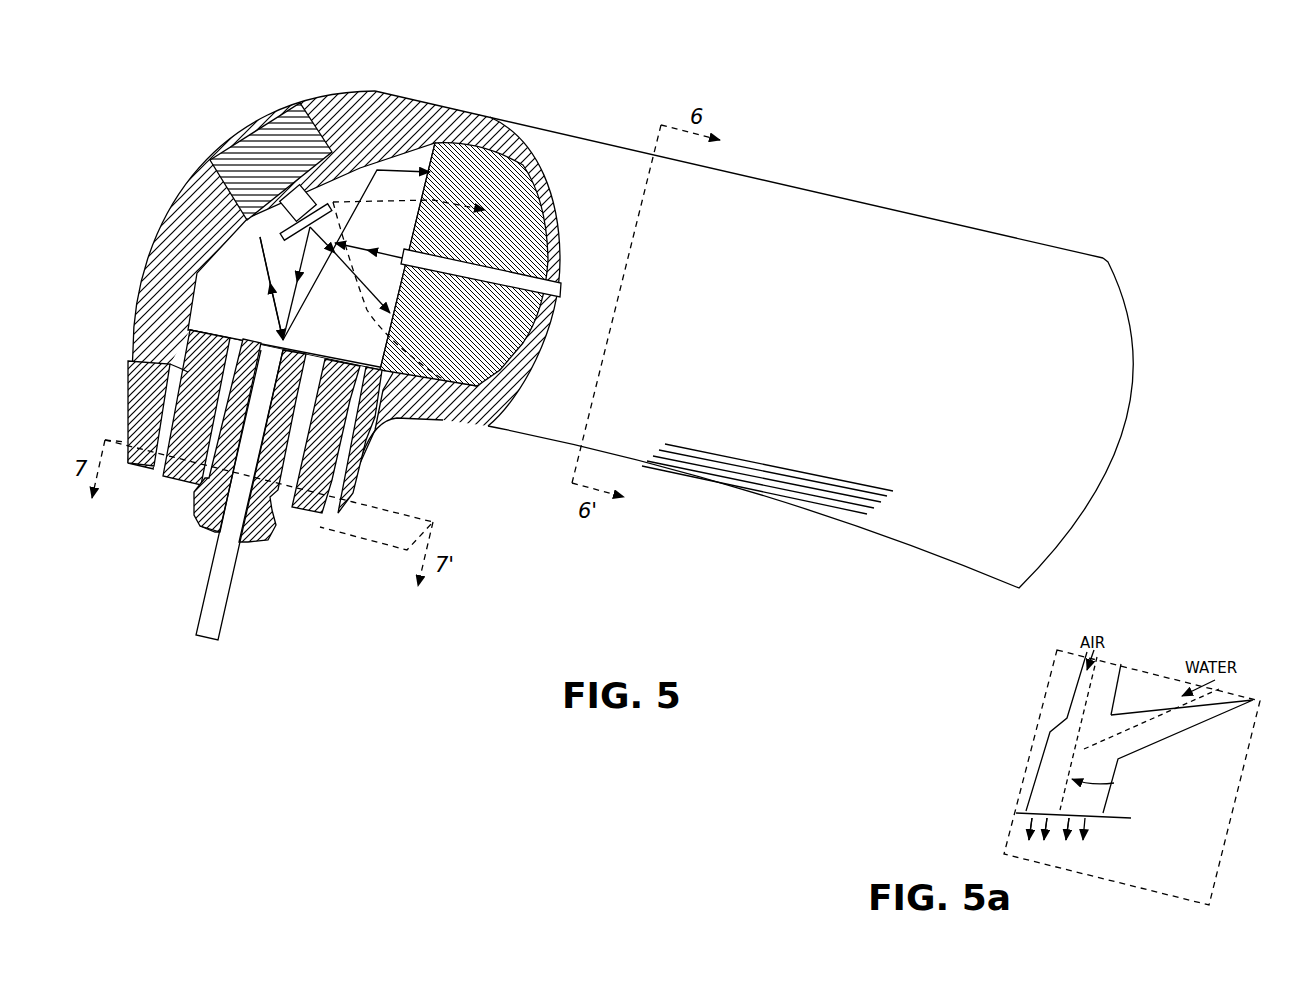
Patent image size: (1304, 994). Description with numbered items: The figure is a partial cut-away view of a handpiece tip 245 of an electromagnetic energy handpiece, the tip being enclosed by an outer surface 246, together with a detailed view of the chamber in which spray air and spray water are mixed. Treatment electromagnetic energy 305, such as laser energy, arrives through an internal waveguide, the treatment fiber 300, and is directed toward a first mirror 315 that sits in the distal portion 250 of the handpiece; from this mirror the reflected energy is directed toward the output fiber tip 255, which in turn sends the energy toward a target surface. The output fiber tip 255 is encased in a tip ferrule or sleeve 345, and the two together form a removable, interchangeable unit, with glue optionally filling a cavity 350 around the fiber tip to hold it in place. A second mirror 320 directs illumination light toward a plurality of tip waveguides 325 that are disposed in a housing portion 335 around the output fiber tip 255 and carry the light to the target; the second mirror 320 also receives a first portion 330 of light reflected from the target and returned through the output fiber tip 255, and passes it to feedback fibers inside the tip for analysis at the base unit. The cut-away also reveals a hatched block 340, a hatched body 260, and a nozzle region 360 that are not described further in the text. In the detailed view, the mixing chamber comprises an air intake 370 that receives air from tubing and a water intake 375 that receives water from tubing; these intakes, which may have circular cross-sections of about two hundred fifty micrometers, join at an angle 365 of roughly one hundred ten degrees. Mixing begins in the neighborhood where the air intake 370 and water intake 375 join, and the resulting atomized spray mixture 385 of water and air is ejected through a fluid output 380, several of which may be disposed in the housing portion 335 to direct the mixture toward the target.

In FIG. 5, the handpiece tip 245 is at (698, 556).
In FIG. 5, the outer surface 246 is at (773, 182).
In FIG. 5, the distal portion 250 is at (143, 266).
In FIG. 5, the output fiber tip 255 is at (229, 610).
In FIG. 5, the head body 260 is at (549, 184).
In FIG. 5, the treatment fiber 300 is at (480, 277).
In FIG. 5, the treatment electromagnetic energy 305 is at (397, 238).
In FIG. 5, the first mirror 315 is at (336, 256).
In FIG. 5, the second mirror 320 is at (237, 248).
In FIG. 5, the tip waveguides 325 is at (133, 362).
In FIG. 5, the first portion of reflected light 330 is at (268, 320).
In FIG. 5, the housing portion 335 is at (128, 402).
In FIG. 5, the lens block 340 is at (495, 115).
In FIG. 5, the tip ferrule or sleeve 345 is at (197, 508).
In FIG. 5, the cavity 350 is at (215, 533).
In FIG. 5, the nozzle 360 is at (442, 443).
In FIG. 5a, the nozzle 360 is at (1024, 756).
In FIG. 5a, the angle 365 is at (1136, 730).
In FIG. 5a, the air intake 370 is at (1072, 681).
In FIG. 5a, the water intake 375 is at (1177, 735).
In FIG. 5, the fluid output 380 is at (350, 477).
In FIG. 5a, the fluid output 380 is at (1050, 776).
In FIG. 5a, the spray mixture 385 is at (1096, 856).